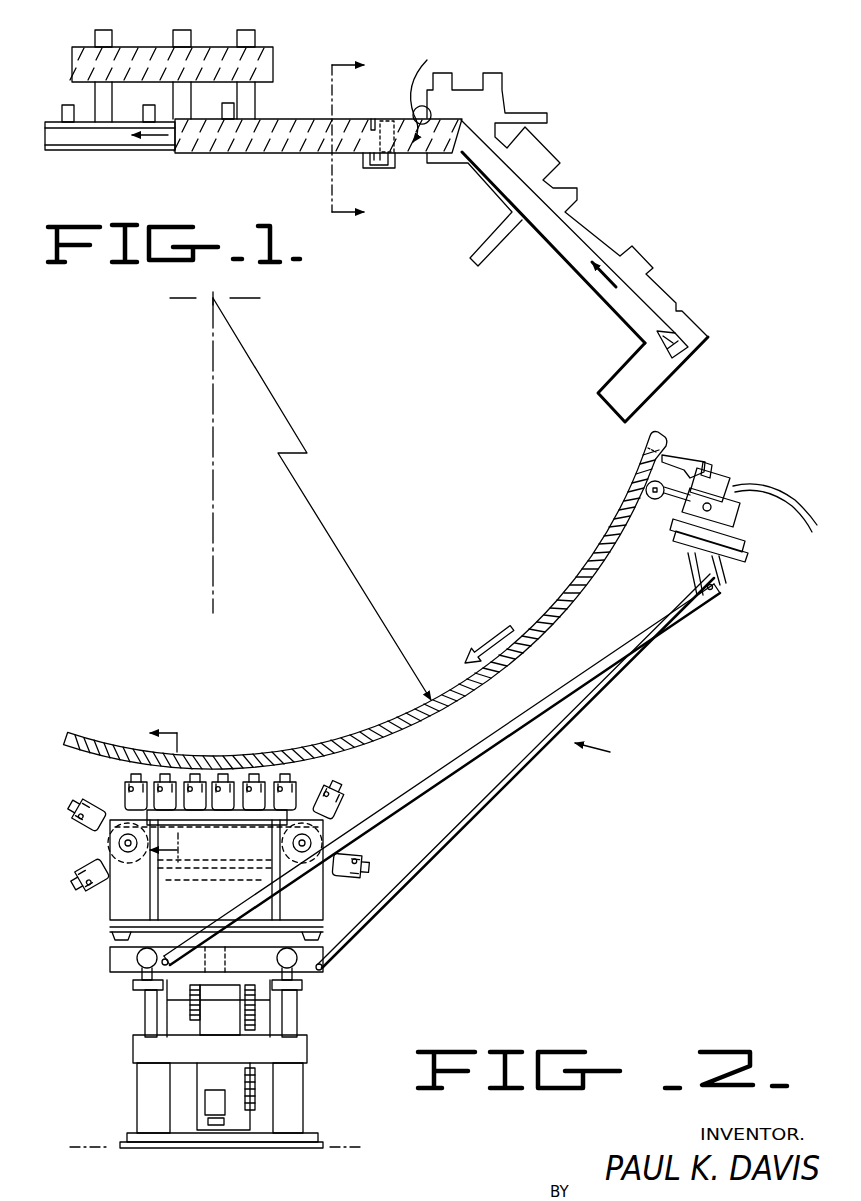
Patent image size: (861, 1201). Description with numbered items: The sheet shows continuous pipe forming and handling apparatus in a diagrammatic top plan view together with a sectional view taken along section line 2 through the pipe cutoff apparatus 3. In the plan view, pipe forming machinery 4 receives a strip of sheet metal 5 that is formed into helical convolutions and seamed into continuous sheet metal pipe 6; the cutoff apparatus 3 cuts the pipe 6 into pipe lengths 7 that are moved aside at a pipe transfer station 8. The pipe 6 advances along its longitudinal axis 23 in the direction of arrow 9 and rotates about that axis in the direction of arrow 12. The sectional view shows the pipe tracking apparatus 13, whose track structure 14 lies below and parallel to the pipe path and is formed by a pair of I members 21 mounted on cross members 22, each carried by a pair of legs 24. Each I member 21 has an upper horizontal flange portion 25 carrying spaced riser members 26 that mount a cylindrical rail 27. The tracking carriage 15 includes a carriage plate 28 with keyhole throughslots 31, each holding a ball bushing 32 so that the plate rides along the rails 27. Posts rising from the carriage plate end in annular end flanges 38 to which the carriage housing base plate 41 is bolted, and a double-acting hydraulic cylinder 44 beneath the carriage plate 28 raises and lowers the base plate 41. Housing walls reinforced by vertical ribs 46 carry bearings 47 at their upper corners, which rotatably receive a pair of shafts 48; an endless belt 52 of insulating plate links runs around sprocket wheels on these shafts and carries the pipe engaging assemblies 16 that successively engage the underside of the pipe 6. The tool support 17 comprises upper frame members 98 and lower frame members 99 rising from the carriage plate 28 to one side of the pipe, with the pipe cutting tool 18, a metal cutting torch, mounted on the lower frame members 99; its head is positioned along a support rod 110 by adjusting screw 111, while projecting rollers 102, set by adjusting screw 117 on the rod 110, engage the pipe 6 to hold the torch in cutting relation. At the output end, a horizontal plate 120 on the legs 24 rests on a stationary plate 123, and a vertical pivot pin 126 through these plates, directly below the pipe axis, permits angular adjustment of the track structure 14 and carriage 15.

In FIG. 1, the section line 2— 2 is at (356, 141).
In FIG. 1, the pipe cutoff apparatus 3 is at (396, 172).
In FIG. 2, the pipe cutoff apparatus 3 is at (608, 877).
In FIG. 1, the pipe forming machinery 4 is at (568, 147).
In FIG. 1, the strip of sheet metal 5 is at (568, 240).
In FIG. 1, the continuous sheet metal pipe 6 is at (277, 156).
In FIG. 2, the continuous sheet metal pipe 6 is at (582, 572).
In FIG. 1, the pipe lengths 7 is at (264, 58).
In FIG. 2, the pipe lengths 7 is at (173, 793).
In FIG. 1, the pipe transfer station 8 is at (100, 170).
In FIG. 1, the arrow 9 is at (146, 140).
In FIG. 1, the arrow 12 is at (431, 88).
In FIG. 2, the arrow 12 is at (504, 628).
In FIG. 2, the pipe tracking apparatus 13 is at (168, 1065).
In FIG. 2, the track structure 14 is at (235, 1132).
In FIG. 2, the tracking carriage 15 is at (340, 906).
In FIG. 2, the pipe engaging assemblies 16 is at (298, 782).
In FIG. 2, the tool support 17 is at (607, 755).
In FIG. 2, the pipe cutting tool 18 is at (713, 466).
In FIG. 2, the "I" members 21 is at (145, 1012).
In FIG. 2, the cross members 22 is at (133, 1052).
In FIG. 2, the longitudinal axis 23 is at (211, 302).
In FIG. 2, the legs 24 is at (137, 1102).
In FIG. 2, the upper horizontal flange portion 25 is at (138, 992).
In FIG. 2, the riser members 26 is at (136, 985).
In FIG. 2, the cylindrical rail 27 is at (136, 962).
In FIG. 2, the carriage plate 28 is at (110, 958).
In FIG. 2, the throughslots 31 is at (166, 956).
In FIG. 2, the ball bushing 32 is at (216, 872).
In FIG. 2, the annular horizontal end flange 38 is at (110, 926).
In FIG. 2, the carriage housing base plate 41 is at (215, 901).
In FIG. 2, the double-acting hydraulic cylinder 44 is at (214, 1032).
In FIG. 2, the vertical ribs 46 is at (160, 880).
In FIG. 2, the bearing 47 is at (127, 836).
In FIG. 2, the shafts 48 is at (107, 845).
In FIG. 2, the endless belt 52 is at (243, 826).
In FIG. 2, the upper frame members 98 is at (608, 668).
In FIG. 2, the lower frame members 99 is at (513, 777).
In FIG. 2, the projecting rollers 102 is at (655, 500).
In FIG. 2, the support rod 110 is at (757, 523).
In FIG. 2, the adjusting screw 111 is at (712, 505).
In FIG. 2, the adjusting screw 117 is at (745, 508).
In FIG. 2, the horizontal plate 120 is at (125, 1142).
In FIG. 2, the horizontal plate 123 is at (162, 1145).
In FIG. 2, the vertical pivot pin 126 is at (215, 1126).